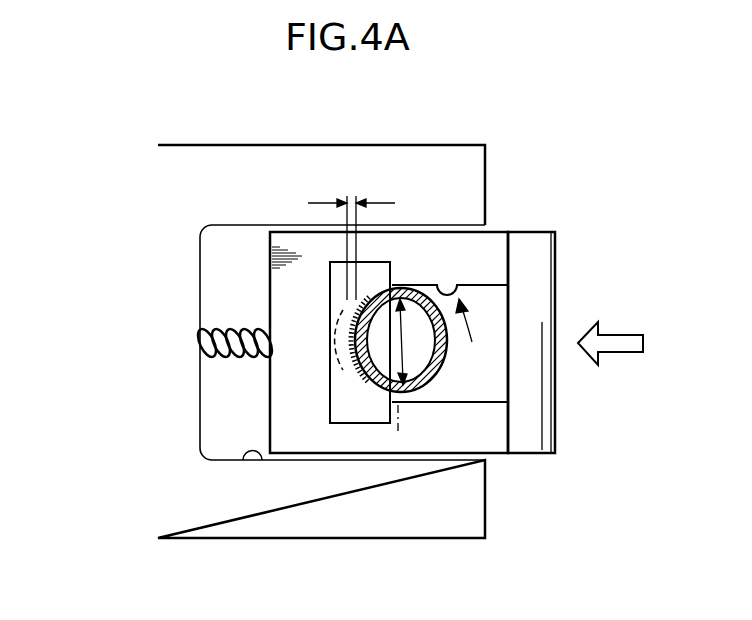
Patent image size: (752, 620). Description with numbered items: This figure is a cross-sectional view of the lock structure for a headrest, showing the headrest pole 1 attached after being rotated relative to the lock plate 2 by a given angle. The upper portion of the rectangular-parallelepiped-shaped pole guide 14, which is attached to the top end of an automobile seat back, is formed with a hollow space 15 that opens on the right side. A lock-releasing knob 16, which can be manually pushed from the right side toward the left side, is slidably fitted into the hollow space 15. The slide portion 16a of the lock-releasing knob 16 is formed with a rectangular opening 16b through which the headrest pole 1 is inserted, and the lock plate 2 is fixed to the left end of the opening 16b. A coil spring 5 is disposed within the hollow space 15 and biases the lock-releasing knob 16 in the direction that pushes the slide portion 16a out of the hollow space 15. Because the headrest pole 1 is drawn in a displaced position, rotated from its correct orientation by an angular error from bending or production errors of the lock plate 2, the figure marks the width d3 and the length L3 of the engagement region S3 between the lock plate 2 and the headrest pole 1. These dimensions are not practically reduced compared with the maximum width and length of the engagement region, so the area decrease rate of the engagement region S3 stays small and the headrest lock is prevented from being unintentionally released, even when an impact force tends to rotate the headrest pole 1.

The pole guide 14 is at (158, 190).
The coil spring 5 is at (255, 327).
The slide portion 16a is at (423, 252).
The rectangular opening 16b is at (449, 292).
The lock-releasing knob 16 is at (538, 245).
The lock plate 2 is at (357, 413).
The headrest pole 1 is at (420, 388).
The engagement region S3 is at (355, 376).
The hollow space 15 is at (250, 461).
The width of engagement region d3 is at (351, 232).
The length of engagement region L3 is at (407, 342).